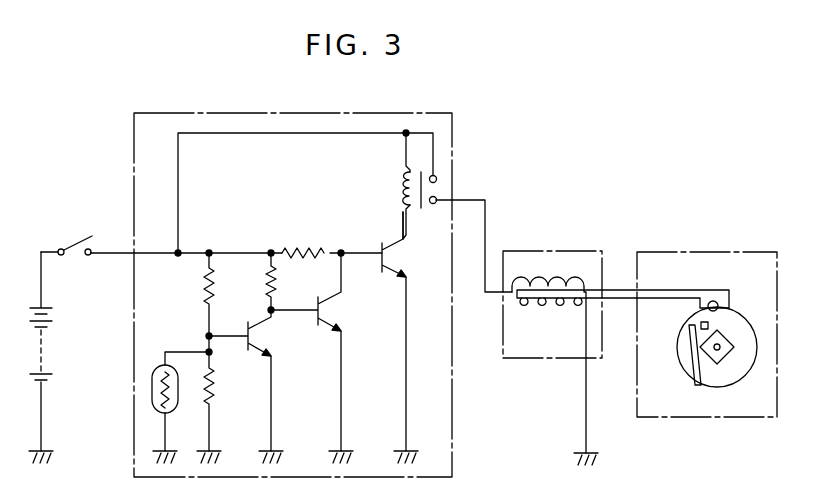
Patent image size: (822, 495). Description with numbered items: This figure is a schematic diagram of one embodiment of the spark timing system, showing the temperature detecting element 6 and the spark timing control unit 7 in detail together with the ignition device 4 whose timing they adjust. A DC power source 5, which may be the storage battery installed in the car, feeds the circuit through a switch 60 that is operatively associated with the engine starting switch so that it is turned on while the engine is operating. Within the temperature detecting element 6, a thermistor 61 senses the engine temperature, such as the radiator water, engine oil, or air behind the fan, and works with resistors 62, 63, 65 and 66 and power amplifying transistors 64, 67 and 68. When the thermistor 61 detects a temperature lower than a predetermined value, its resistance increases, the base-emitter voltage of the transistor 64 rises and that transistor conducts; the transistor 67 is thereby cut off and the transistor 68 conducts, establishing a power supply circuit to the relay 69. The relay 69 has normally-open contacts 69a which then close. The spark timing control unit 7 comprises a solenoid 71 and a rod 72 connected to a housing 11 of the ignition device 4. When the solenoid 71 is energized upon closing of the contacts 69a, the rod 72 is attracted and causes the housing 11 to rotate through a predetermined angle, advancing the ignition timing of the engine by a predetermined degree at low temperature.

The ignition device 4 is at (707, 316).
The DC power source 5 is at (47, 338).
The temperature detecting element 6 is at (150, 407).
The spark timing control unit 7 is at (552, 339).
The housing 11 is at (692, 381).
The switch 60 is at (82, 235).
The thermistor 61 is at (175, 400).
The resistor 62 is at (214, 389).
The resistor 63 is at (200, 292).
The power amplifying transistor 64 is at (262, 346).
The resistor 65 is at (265, 283).
The resistor 66 is at (301, 247).
The power amplifying transistor 67 is at (343, 313).
The power amplifying transistor 68 is at (396, 259).
The relay 69 is at (397, 196).
The normally-open contacts 69a is at (437, 187).
The solenoid 71 is at (545, 301).
The rod 72 is at (621, 290).